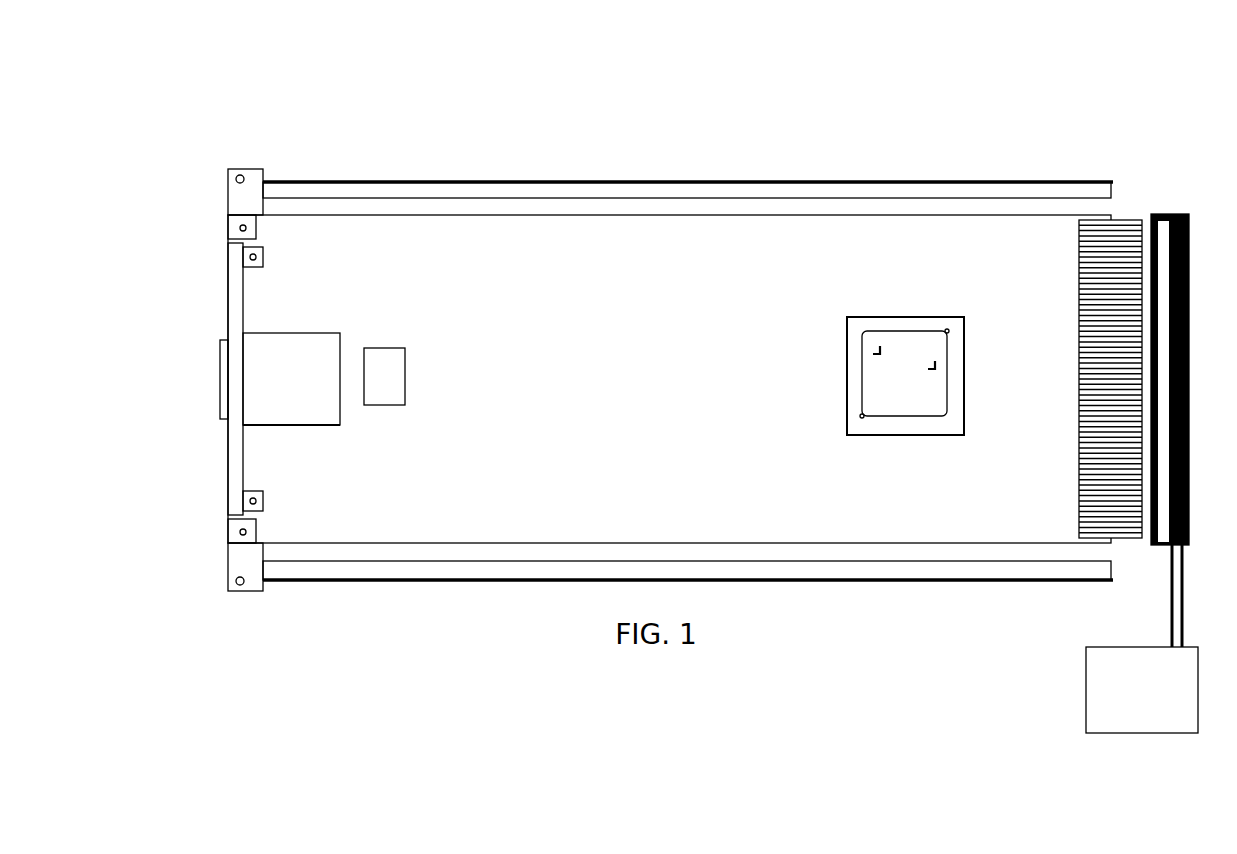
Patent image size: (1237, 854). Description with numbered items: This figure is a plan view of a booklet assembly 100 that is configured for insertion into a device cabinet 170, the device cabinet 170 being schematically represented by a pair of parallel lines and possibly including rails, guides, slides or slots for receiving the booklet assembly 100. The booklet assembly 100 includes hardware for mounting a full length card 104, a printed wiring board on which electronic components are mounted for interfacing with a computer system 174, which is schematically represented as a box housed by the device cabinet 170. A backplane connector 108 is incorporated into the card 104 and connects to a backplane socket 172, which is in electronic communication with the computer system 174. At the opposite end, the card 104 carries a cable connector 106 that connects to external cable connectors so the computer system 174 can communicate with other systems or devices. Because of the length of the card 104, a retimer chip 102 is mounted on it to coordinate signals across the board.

The booklet assembly 100 is at (651, 343).
The retimer chip 102 is at (394, 377).
The card 104 is at (711, 323).
The cable connector 106 is at (223, 373).
The backplane connector 108 is at (1105, 245).
The device cabinet 170 is at (1061, 180).
The backplane socket 172 is at (1163, 227).
The computer system 174 is at (1118, 718).